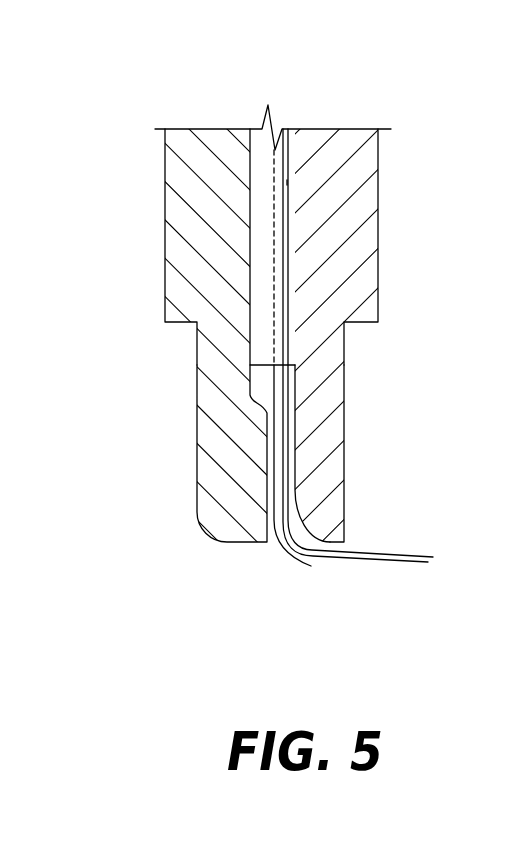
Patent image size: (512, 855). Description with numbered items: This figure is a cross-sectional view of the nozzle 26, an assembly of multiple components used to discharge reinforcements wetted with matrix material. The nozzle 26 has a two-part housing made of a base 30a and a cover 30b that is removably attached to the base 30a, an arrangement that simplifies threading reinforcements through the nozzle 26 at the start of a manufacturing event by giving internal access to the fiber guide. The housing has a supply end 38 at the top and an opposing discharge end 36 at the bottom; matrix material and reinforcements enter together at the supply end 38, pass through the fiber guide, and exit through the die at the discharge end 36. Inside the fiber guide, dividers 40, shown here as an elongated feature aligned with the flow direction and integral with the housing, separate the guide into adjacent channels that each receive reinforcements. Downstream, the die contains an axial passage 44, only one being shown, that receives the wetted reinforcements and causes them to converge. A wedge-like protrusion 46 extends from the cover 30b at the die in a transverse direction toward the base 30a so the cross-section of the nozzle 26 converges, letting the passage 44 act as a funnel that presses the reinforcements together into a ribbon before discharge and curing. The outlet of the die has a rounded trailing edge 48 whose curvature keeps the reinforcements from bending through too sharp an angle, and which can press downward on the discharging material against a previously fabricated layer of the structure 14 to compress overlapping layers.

The structure 14 is at (418, 553).
The nozzle 26 is at (431, 102).
The base 30a is at (322, 266).
The cover 30b is at (225, 266).
The discharge end 36 is at (170, 536).
The supply end 38 is at (119, 168).
The dividers 40 is at (264, 333).
The axial passages 44 is at (291, 486).
The wedge-like protrusion 46 is at (223, 431).
The rounded trailing edge 48 is at (311, 566).